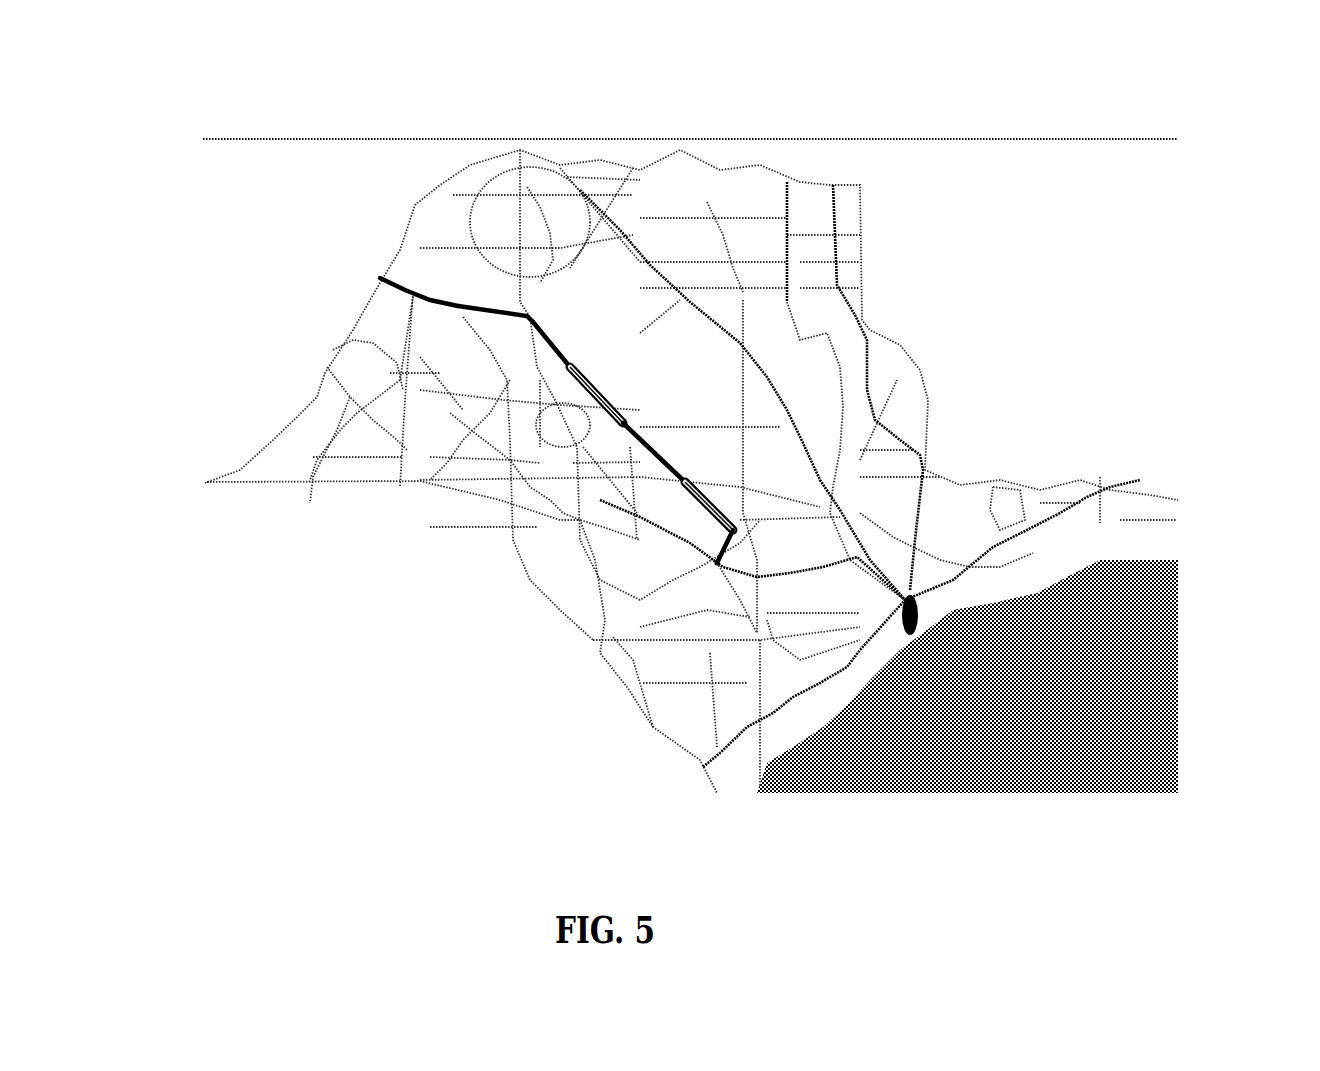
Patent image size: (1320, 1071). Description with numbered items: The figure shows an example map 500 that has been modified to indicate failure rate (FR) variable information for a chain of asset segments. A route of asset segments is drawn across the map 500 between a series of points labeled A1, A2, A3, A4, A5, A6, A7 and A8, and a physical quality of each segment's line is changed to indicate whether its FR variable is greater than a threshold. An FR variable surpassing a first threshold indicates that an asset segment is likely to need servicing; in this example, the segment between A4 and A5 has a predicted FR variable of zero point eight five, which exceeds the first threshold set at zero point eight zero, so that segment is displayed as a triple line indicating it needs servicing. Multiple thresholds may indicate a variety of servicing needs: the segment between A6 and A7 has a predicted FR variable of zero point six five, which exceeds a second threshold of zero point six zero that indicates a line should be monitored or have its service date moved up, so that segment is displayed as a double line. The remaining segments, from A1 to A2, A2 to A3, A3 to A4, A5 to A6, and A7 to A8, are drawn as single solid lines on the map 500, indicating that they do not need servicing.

The map 500 is at (1180, 66).
The asset segment endpoint A1 is at (419, 271).
The asset segment endpoint A2 is at (490, 291).
The asset segment endpoint A3 is at (548, 320).
The asset segment endpoint A4 is at (596, 376).
The asset segment endpoint A5 is at (654, 426).
The asset segment endpoint A6 is at (712, 481).
The asset segment endpoint A7 is at (751, 524).
The asset segment endpoint A8 is at (725, 588).